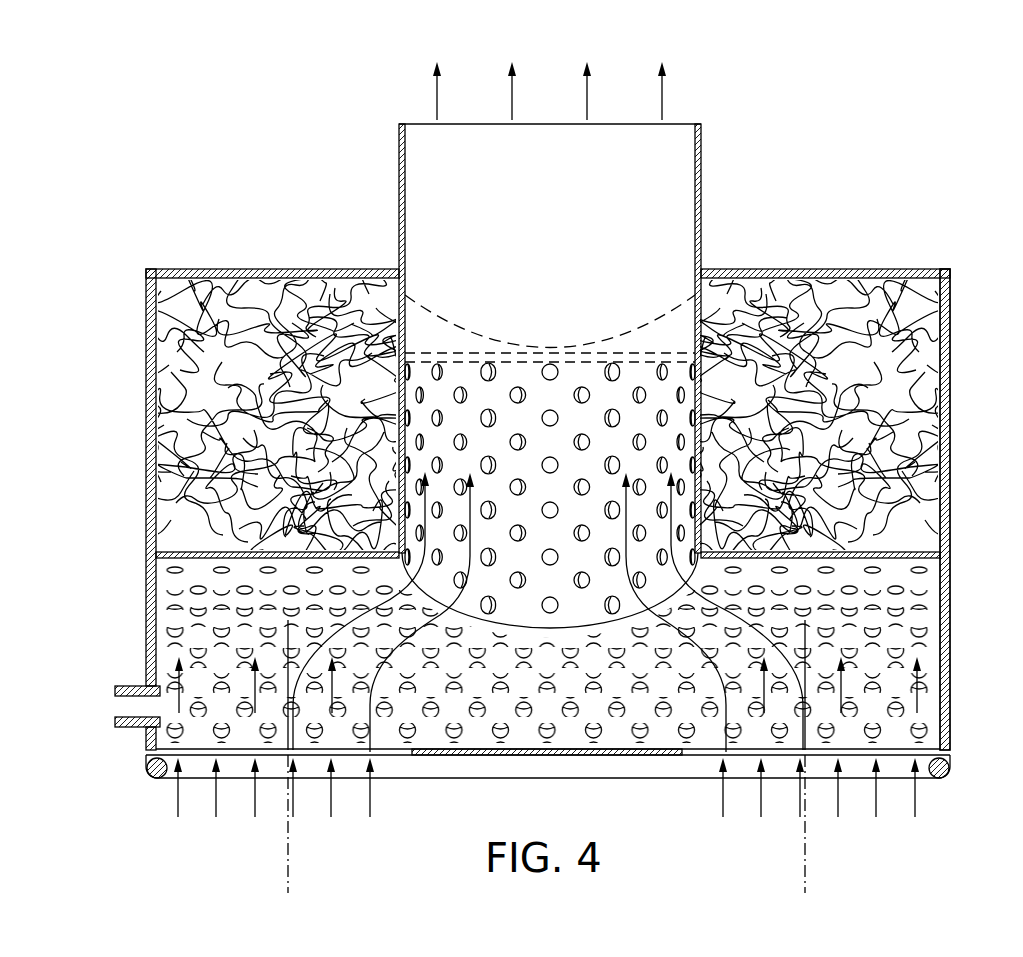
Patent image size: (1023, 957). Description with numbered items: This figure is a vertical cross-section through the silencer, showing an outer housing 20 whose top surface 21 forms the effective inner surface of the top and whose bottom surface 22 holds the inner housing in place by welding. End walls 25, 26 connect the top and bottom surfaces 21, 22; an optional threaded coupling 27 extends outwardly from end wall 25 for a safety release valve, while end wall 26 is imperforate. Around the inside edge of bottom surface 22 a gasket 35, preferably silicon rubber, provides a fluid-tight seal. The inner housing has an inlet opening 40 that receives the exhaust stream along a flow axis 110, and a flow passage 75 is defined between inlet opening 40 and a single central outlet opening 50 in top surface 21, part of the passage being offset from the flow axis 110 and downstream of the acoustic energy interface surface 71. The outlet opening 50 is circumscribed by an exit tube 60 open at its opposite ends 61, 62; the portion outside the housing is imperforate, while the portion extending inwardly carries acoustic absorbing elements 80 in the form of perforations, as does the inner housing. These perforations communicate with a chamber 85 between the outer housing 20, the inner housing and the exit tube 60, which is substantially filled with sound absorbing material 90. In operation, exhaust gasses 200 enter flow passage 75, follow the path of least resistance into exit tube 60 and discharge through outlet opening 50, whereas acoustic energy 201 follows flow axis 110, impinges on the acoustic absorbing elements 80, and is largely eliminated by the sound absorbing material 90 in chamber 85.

The outer housing 20 is at (893, 268).
The top surface 21 is at (186, 268).
The bottom surface 22 is at (548, 755).
The end wall 25 is at (146, 471).
The end wall 26 is at (950, 471).
The coupling 27 is at (115, 708).
The gasket 35 is at (931, 773).
The inlet opening 40 is at (398, 755).
The outlet opening 50 is at (640, 328).
The exit tube 60 is at (399, 213).
The end of exit tube 61 is at (467, 122).
The end of exit tube 62 is at (723, 813).
The acoustic energy interface surface 71 is at (162, 552).
The flow passage 75 is at (167, 607).
The acoustic absorbing elements 80 is at (399, 416).
The chamber 85 is at (157, 302).
The sound absorbing material 90 is at (950, 413).
The flow axis 110 is at (288, 868).
The exhaust gasses 200 is at (437, 92).
The acoustic energy 201 is at (178, 666).